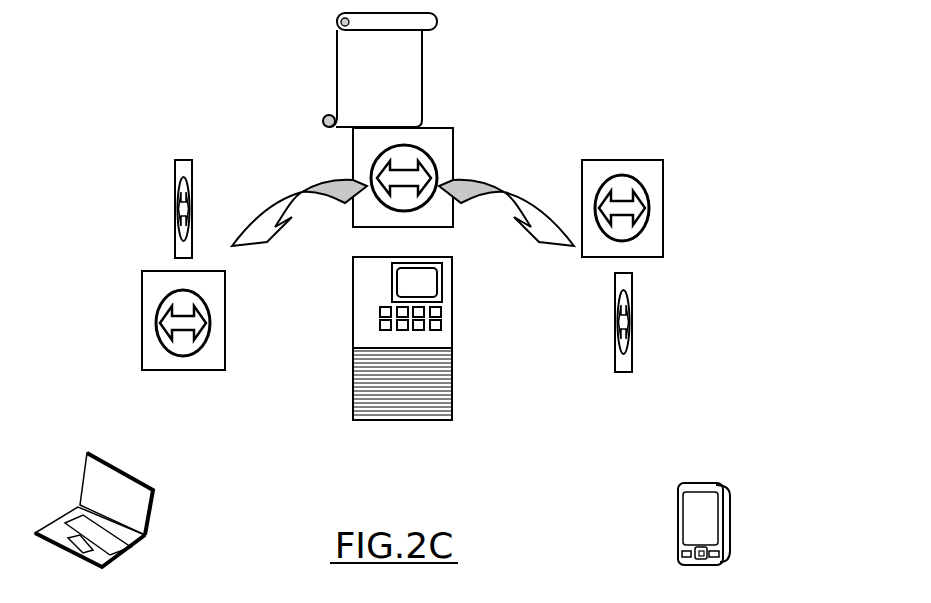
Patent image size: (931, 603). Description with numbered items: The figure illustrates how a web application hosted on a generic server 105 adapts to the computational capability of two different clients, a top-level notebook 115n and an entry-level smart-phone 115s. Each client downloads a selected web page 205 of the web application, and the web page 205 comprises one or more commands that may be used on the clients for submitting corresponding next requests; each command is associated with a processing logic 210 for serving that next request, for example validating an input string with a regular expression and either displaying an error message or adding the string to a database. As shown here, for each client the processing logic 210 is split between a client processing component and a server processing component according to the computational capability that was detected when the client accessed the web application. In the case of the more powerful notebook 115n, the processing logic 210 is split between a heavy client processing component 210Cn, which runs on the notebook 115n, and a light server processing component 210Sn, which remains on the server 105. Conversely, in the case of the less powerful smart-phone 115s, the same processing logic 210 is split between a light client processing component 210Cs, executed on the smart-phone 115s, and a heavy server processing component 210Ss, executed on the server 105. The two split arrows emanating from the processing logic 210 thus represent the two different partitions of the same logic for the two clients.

The web page 205 is at (425, 73).
The processing logic 210 is at (453, 153).
The light server processing component 210Sn is at (177, 220).
The heavy client processing component 210Cn is at (142, 298).
The heavy server processing component 210Ss is at (615, 160).
The light client processing component 210Cs is at (632, 313).
The server 105 is at (452, 383).
The notebook 115n is at (152, 508).
The smart-phone 115s is at (678, 502).